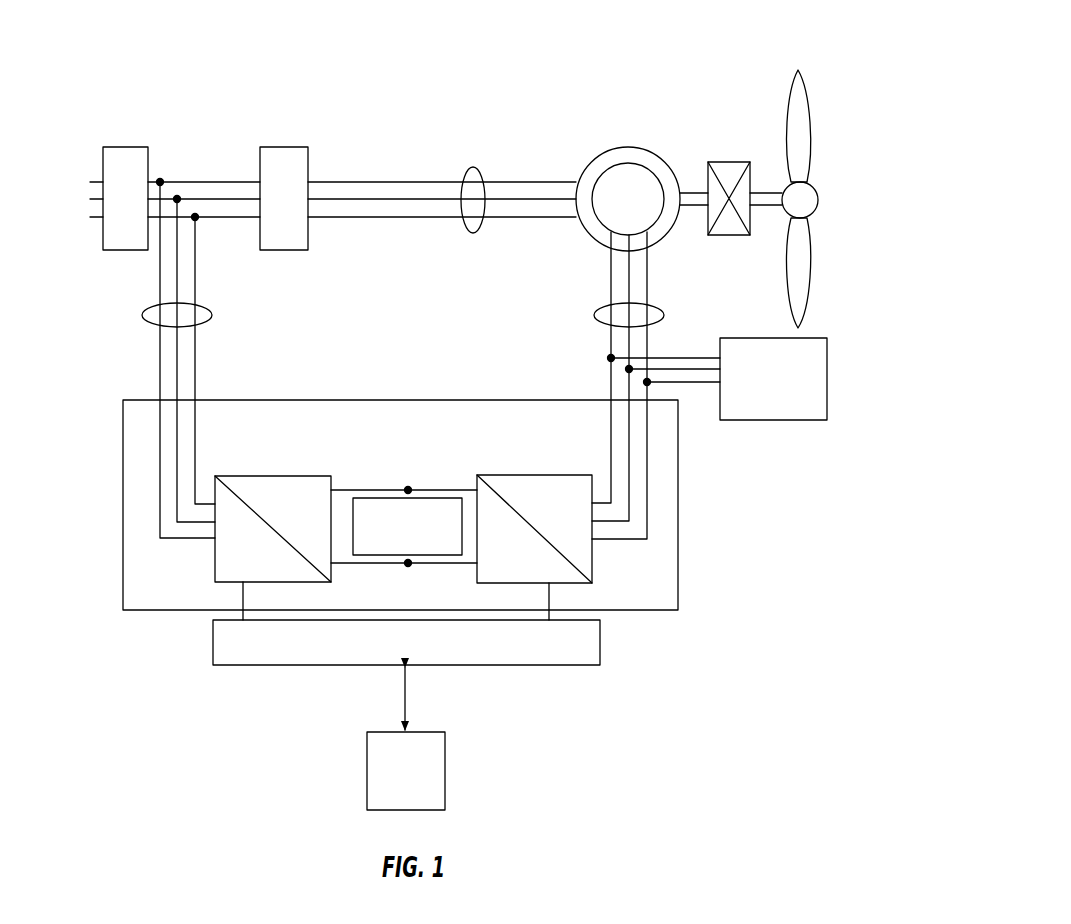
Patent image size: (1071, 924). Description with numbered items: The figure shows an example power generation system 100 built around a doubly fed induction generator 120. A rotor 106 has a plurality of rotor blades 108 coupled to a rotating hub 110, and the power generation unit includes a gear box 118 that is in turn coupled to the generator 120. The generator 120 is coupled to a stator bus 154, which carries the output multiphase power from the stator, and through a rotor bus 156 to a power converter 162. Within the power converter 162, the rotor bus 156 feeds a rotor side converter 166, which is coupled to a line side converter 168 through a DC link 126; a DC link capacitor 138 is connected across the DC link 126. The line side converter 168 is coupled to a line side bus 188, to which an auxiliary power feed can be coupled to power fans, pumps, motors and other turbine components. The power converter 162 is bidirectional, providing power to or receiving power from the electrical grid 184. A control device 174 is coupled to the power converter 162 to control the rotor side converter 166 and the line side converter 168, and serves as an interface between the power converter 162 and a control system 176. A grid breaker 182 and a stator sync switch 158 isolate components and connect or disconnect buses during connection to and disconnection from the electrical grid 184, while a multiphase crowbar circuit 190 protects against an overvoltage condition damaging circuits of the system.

The power generation system 100 is at (681, 51).
The rotor 106 is at (827, 185).
The rotor blades 108 is at (810, 135).
The rotating hub 110 is at (820, 193).
The gear box 118 is at (727, 162).
The generator 120 is at (638, 150).
The DC link 126 is at (369, 489).
The DC link capacitor 138 is at (442, 497).
The stator bus 154 is at (473, 167).
The rotor bus 156 is at (600, 312).
The stator sync switch 158 is at (283, 147).
The power converter 162 is at (678, 483).
The rotor side converter 166 is at (510, 475).
The line side converter 168 is at (273, 476).
The control device 174 is at (548, 665).
The control system 176 is at (445, 773).
The grid breaker 182 is at (115, 147).
The electrical grid 184 is at (80, 185).
The line side bus 188 is at (210, 316).
The multiphase crowbar circuit 190 is at (827, 377).